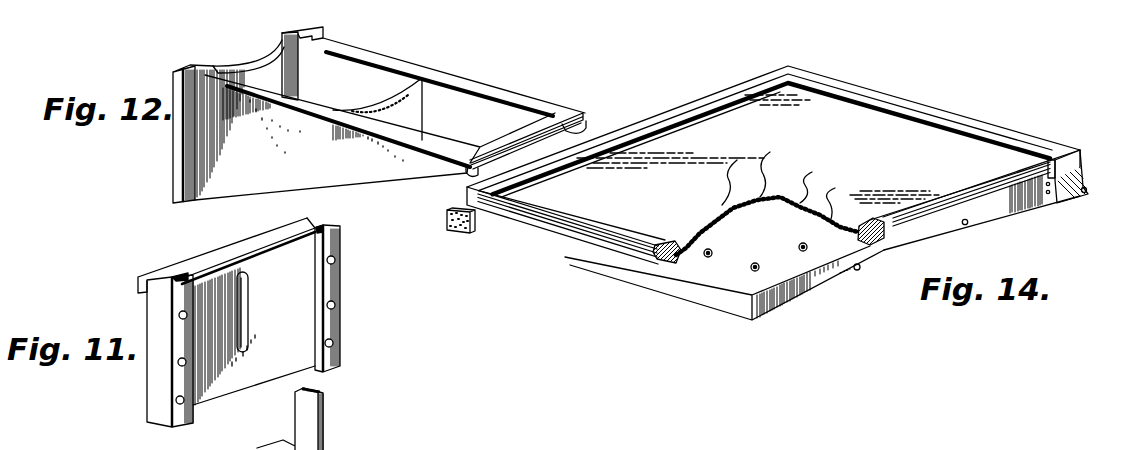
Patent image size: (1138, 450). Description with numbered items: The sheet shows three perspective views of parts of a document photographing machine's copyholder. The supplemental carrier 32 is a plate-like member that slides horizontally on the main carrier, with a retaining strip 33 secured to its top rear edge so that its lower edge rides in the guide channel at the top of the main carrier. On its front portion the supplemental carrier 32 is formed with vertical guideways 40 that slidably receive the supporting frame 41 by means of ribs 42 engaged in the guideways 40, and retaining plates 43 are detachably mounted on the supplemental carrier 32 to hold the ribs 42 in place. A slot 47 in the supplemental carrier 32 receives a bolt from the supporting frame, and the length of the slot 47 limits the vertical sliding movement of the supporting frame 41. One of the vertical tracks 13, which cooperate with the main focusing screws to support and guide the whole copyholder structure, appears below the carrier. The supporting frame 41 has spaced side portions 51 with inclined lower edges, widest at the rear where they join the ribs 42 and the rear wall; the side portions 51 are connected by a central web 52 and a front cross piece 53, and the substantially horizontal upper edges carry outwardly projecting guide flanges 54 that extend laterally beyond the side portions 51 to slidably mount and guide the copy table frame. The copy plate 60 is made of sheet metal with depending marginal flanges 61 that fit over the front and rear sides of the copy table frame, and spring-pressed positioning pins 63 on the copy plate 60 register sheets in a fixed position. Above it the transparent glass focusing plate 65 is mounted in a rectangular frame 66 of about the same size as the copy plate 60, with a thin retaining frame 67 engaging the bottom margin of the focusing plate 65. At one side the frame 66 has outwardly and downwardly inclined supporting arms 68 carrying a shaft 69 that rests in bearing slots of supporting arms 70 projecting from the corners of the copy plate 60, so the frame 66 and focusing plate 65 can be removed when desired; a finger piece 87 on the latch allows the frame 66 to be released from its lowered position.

In FIG. 11, the vertical tracks 13 is at (303, 413).
In FIG. 11, the supplemental carrier 32 is at (343, 296).
In FIG. 11, the retaining strip 33 is at (137, 290).
In FIG. 11, the vertical guideways 40 is at (182, 275).
In FIG. 12, the supporting frame 41 is at (510, 69).
In FIG. 12, the ribs 42 is at (323, 33).
In FIG. 11, the retaining plates 43 is at (334, 258).
In FIG. 11, the slot 47 is at (248, 305).
In FIG. 12, the side portions 51 is at (453, 100).
In FIG. 12, the central web 52 is at (418, 88).
In FIG. 12, the front cross piece 53 is at (530, 125).
In FIG. 12, the guide flanges 54 is at (375, 53).
In FIG. 14, the copy plate 60 is at (717, 287).
In FIG. 14, the depending marginal flanges 61 is at (840, 283).
In FIG. 14, the positioning pins 63 is at (757, 263).
In FIG. 14, the transparent glass focusing plate 65 is at (955, 150).
In FIG. 14, the rectangular frame 66 is at (918, 108).
In FIG. 14, the retaining frame 67 is at (670, 262).
In FIG. 14, the supporting arms 68 is at (756, 79).
In FIG. 14, the shaft 69 is at (1087, 194).
In FIG. 14, the supporting arms 70 is at (1060, 198).
In FIG. 14, the finger piece 87 is at (463, 233).